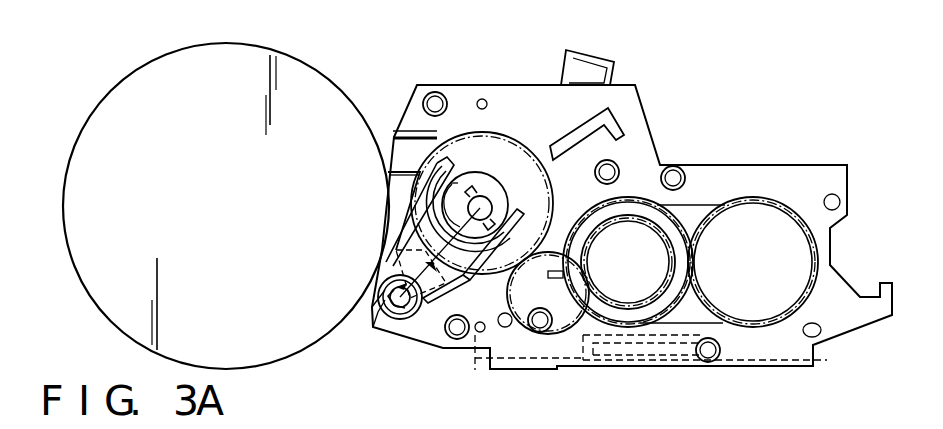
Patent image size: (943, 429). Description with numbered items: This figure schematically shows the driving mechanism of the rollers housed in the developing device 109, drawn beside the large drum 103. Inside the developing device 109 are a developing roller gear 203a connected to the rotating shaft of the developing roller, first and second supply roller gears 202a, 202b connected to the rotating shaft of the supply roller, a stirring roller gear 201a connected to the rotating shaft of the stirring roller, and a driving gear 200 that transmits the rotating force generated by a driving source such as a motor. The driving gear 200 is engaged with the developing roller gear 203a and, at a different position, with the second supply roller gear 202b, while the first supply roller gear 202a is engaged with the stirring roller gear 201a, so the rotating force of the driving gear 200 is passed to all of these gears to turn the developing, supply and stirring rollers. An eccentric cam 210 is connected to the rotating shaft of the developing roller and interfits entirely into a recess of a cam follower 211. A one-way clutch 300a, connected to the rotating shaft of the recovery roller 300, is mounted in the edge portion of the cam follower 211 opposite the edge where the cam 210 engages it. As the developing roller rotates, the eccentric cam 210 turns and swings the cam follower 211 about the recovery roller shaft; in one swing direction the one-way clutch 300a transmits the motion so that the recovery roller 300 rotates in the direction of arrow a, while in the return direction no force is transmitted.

The photosensitive drum 103 is at (306, 66).
The developing device 109 is at (817, 164).
The driving gear 200 is at (545, 335).
The stirring roller gear 201a is at (725, 203).
The first supply roller gear 202a is at (641, 200).
The second supply roller gear 202b is at (657, 307).
The developing roller gear 203a is at (507, 150).
The eccentric cam 210 is at (464, 163).
The cam follower 211 is at (443, 343).
The recovery roller 300 is at (388, 320).
The one-way clutch 300a is at (410, 335).
The arrow a is at (379, 292).